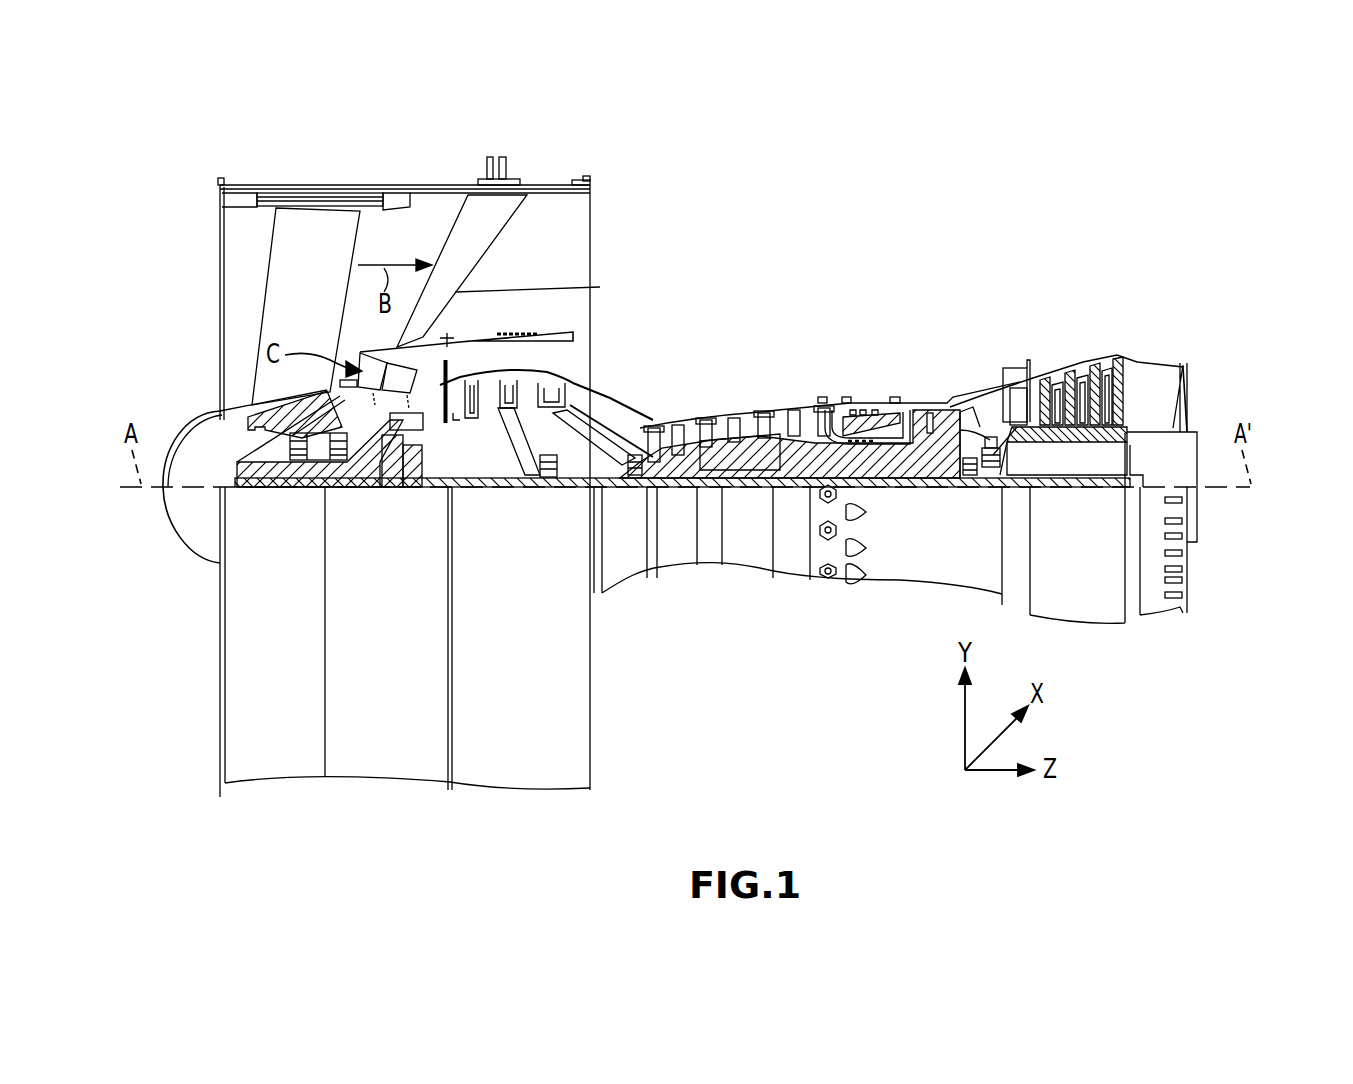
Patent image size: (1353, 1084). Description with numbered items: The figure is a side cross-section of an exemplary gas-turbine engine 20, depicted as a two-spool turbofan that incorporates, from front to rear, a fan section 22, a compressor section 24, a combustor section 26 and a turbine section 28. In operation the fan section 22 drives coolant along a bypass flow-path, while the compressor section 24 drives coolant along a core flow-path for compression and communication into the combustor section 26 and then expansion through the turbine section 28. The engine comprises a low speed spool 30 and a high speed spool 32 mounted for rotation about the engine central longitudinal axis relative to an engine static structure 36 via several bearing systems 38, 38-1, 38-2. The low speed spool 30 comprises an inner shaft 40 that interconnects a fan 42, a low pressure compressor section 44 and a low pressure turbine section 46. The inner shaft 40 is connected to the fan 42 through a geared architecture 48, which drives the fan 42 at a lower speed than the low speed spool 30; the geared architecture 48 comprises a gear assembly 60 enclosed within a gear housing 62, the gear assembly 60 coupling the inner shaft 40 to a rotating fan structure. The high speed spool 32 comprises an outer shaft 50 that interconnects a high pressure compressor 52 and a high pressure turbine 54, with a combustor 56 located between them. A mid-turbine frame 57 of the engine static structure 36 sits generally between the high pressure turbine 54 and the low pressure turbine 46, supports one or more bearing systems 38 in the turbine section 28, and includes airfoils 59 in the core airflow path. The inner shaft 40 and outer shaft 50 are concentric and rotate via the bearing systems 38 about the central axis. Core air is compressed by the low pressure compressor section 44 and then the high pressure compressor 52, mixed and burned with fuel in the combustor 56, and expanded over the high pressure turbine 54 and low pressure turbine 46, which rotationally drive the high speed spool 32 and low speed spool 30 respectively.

The gas-turbine engine 20 is at (912, 222).
The fan section 22 is at (450, 162).
The compressor section 24 is at (452, 294).
The combustor section 26 is at (925, 294).
The turbine section 28 is at (1130, 294).
The low speed spool 30 is at (758, 505).
The high speed spool 32 is at (793, 455).
The engine static structure 36 is at (385, 764).
The bearing system 38 is at (987, 470).
The bearing system 38-1 is at (304, 462).
The bearing system 38-2 is at (545, 478).
The inner shaft 40 is at (615, 493).
The fan 42 is at (316, 306).
The low pressure compressor section 44 is at (525, 387).
The low pressure turbine section 46 is at (1063, 375).
The geared architecture 48 is at (414, 506).
The outer shaft 50 is at (865, 462).
The high pressure compressor 52 is at (738, 456).
The high pressure turbine 54 is at (936, 403).
The combustor 56 is at (864, 426).
The mid-turbine frame 57 is at (977, 405).
The airfoils 59 is at (990, 428).
The gear assembly 60 is at (430, 472).
The gear housing 62 is at (423, 441).